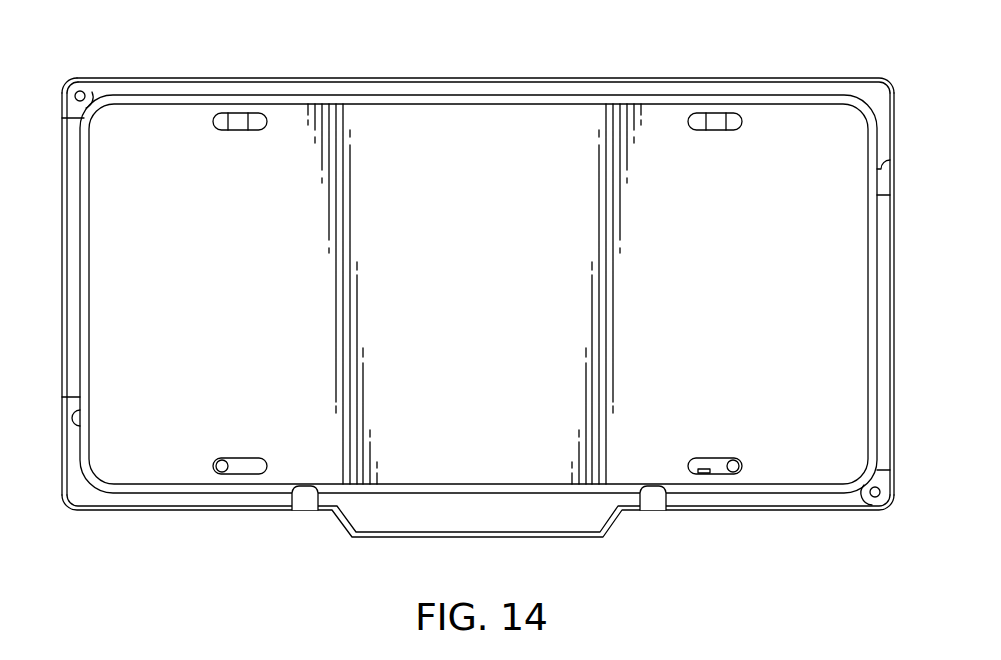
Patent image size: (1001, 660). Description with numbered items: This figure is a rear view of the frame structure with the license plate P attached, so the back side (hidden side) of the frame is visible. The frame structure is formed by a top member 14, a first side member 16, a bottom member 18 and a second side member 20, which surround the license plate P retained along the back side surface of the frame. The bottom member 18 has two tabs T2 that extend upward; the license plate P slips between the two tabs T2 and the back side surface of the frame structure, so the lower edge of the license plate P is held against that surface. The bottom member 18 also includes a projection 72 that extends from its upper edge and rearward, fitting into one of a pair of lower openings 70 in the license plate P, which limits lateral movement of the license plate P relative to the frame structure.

The top member 14 is at (571, 88).
The first side member 16 is at (62, 272).
The bottom member 18 is at (175, 511).
The second side member 20 is at (894, 290).
The lower openings 70 is at (215, 465).
The projection 72 is at (702, 469).
The license plate P is at (433, 153).
The tabs T2 is at (303, 497).